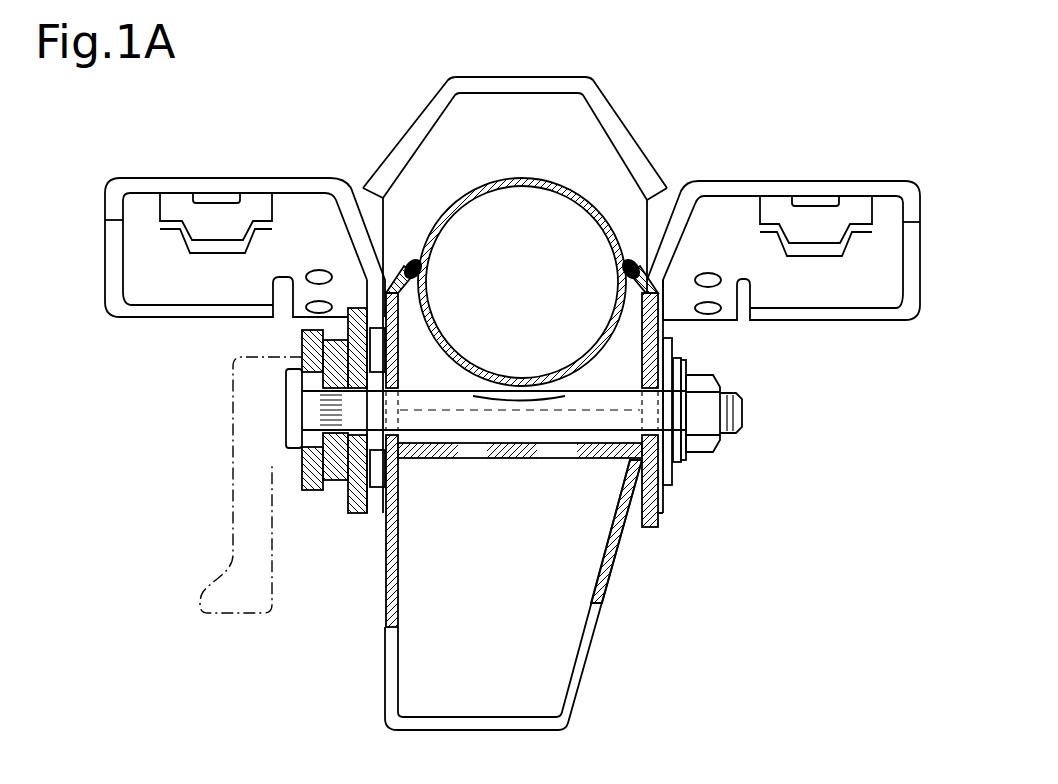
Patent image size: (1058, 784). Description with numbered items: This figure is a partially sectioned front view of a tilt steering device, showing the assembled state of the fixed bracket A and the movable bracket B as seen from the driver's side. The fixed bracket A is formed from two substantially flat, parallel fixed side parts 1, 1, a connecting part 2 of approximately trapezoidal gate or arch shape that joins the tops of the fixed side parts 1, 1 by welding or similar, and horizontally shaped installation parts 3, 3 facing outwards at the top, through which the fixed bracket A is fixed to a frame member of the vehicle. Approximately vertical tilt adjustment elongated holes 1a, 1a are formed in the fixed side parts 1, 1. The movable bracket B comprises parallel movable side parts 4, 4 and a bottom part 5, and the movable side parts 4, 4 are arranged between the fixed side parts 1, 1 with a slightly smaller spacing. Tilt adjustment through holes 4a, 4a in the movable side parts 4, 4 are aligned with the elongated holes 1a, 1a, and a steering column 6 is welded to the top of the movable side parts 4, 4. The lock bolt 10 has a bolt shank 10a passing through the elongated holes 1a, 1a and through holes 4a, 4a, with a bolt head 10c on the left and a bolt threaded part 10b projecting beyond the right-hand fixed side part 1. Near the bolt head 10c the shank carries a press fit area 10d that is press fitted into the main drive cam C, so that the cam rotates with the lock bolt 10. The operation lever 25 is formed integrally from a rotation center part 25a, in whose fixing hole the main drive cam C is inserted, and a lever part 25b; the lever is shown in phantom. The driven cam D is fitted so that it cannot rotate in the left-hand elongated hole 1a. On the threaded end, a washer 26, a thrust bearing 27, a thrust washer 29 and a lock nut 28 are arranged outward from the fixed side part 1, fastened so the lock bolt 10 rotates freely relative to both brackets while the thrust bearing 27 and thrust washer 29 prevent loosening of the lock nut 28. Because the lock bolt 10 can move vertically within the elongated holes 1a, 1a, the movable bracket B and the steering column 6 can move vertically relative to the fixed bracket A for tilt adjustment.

The fixed side part 1 is at (366, 291).
The tilt adjustment elongated hole 1a is at (378, 352).
The connecting part 2 is at (531, 77).
The installation part 3 is at (266, 178).
The movable side part 4 is at (403, 491).
The tilt adjustment through hole 4a is at (477, 460).
The bottom part 5 is at (492, 717).
The steering column 6 is at (548, 187).
The lock bolt 10 is at (521, 420).
The bolt shank 10a is at (498, 457).
The bolt threaded part 10b is at (740, 397).
The bolt head 10c is at (293, 391).
The press fit area 10d is at (293, 410).
The operation lever 25 is at (299, 478).
The rotation center part 25a is at (293, 473).
The lever part 25b is at (200, 593).
The washer 26 is at (670, 486).
The thrust bearing 27 is at (690, 462).
The lock nut 28 is at (722, 449).
The thrust washer 29 is at (687, 360).
The fixed bracket A is at (647, 136).
The movable bracket B is at (383, 667).
The main drive cam C is at (332, 492).
The driven cam D is at (354, 518).